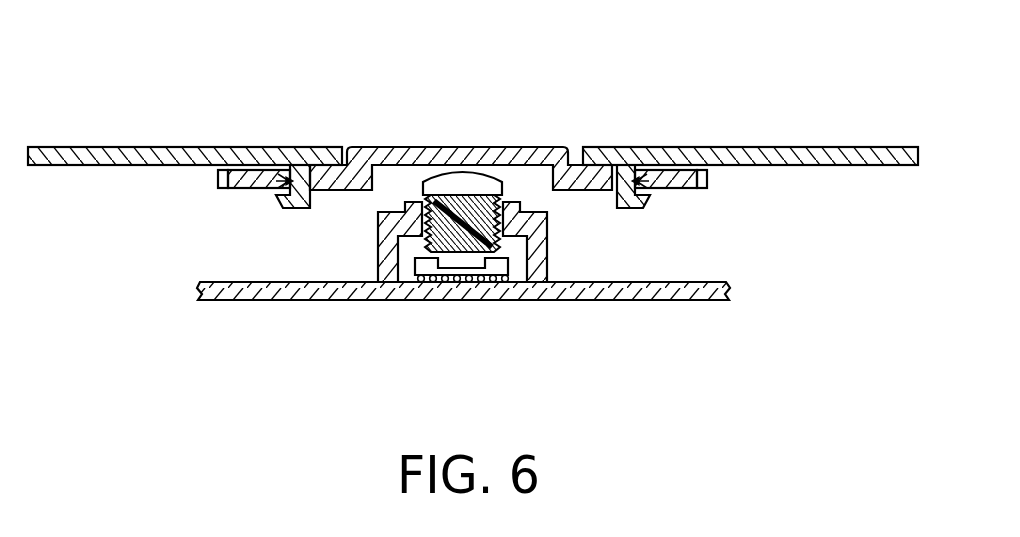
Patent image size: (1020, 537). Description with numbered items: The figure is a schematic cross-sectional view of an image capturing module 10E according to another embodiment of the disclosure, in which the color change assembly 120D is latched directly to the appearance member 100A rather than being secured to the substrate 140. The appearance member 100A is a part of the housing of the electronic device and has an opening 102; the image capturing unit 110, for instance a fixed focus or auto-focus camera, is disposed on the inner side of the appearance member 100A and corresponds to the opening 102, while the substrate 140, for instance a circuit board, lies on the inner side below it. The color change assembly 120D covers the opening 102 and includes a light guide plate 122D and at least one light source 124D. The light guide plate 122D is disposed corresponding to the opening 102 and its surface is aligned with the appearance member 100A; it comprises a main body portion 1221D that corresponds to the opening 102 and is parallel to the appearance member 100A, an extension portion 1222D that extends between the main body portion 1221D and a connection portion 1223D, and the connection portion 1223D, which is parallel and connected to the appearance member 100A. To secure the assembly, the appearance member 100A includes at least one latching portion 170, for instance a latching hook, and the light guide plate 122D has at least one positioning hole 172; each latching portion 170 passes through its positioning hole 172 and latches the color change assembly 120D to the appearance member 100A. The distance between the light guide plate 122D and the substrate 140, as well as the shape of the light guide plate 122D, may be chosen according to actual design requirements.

The image capturing module 10E is at (117, 83).
The appearance member 100A is at (690, 146).
The opening 102 is at (346, 147).
The image capturing unit 110 is at (460, 237).
The color change assembly 120D is at (473, 156).
The light guide plate 122D is at (423, 145).
The main body portion 1221D is at (527, 146).
The extension portion 1222D is at (572, 149).
The connection portion 1223D is at (676, 183).
The light source 124D is at (218, 179).
The substrate 140 is at (246, 299).
The latching portion 170 is at (284, 207).
The positioning hole 172 is at (276, 184).